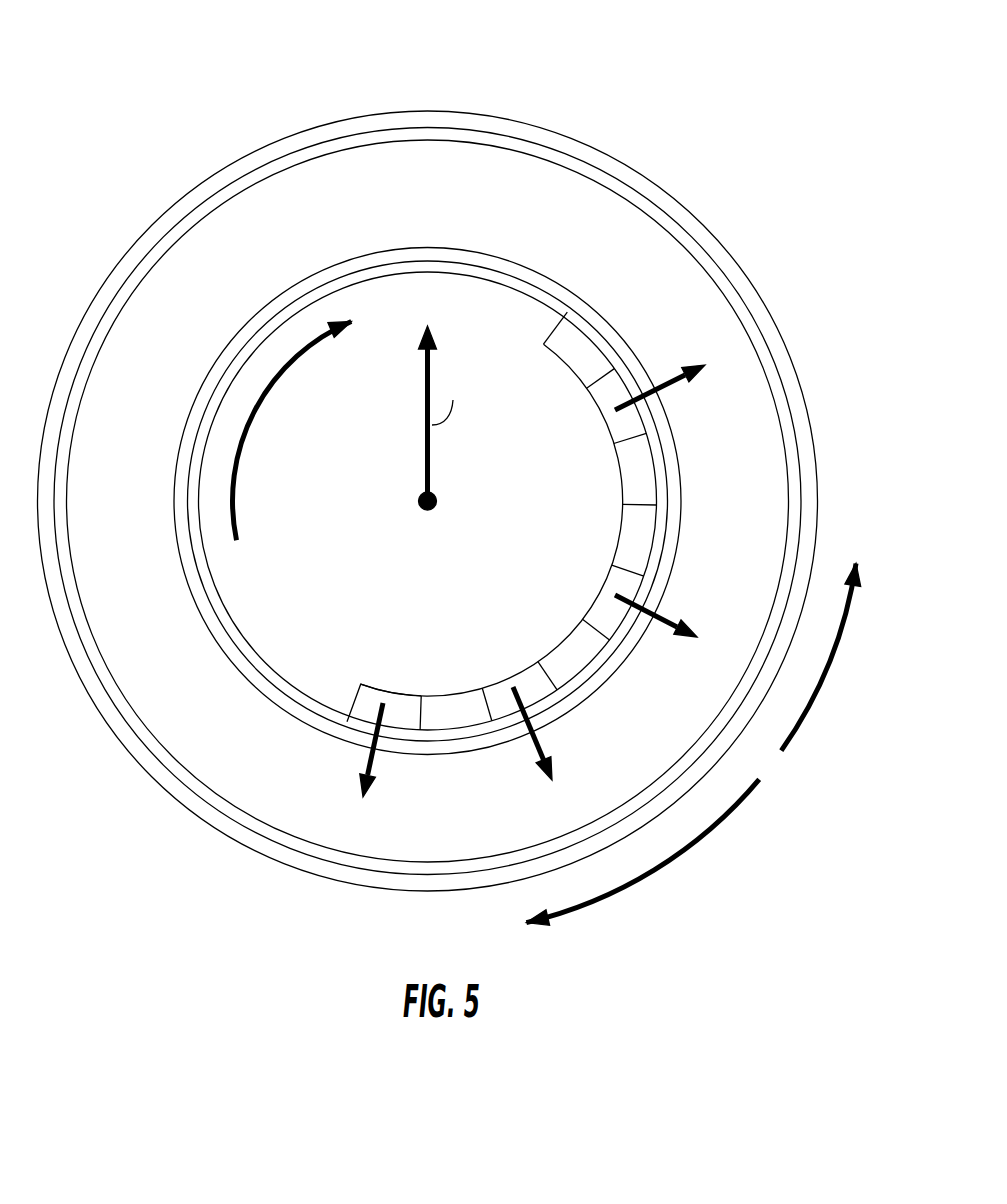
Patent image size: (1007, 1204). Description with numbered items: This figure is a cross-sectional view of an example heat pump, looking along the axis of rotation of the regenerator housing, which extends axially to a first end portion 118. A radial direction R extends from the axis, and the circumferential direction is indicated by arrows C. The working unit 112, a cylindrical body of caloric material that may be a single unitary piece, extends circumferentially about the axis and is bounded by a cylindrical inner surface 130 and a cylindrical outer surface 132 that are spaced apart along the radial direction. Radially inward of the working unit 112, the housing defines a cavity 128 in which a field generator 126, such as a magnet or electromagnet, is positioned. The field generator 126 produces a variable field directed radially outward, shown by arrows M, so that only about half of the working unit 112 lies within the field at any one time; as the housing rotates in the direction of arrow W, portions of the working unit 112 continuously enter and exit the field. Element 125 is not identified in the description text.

The working unit 112 is at (191, 260).
The first end portion 118 is at (773, 147).
The magnet ring 125 is at (502, 521).
The field generator 126 is at (379, 687).
The cavity 128 is at (298, 627).
The cylindrical inner surface 130 is at (465, 247).
The cylindrical outer surface 132 is at (408, 140).